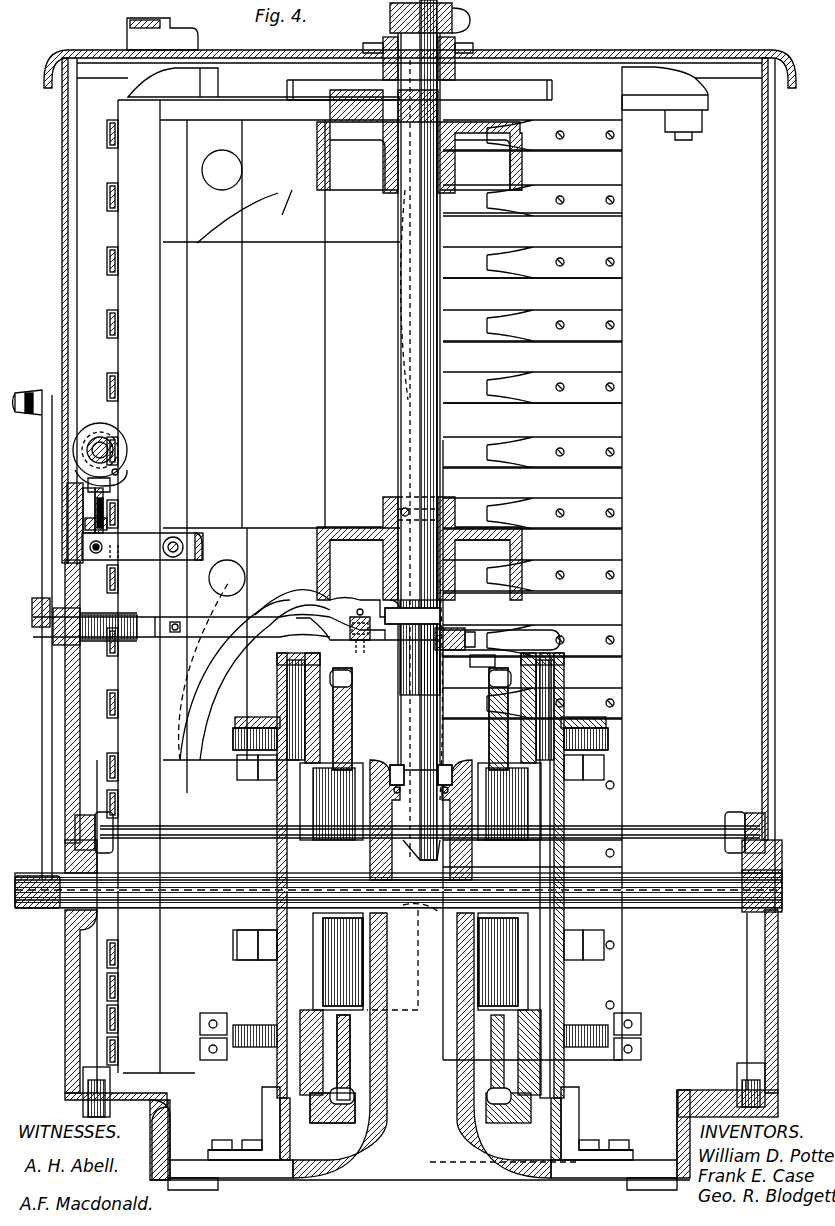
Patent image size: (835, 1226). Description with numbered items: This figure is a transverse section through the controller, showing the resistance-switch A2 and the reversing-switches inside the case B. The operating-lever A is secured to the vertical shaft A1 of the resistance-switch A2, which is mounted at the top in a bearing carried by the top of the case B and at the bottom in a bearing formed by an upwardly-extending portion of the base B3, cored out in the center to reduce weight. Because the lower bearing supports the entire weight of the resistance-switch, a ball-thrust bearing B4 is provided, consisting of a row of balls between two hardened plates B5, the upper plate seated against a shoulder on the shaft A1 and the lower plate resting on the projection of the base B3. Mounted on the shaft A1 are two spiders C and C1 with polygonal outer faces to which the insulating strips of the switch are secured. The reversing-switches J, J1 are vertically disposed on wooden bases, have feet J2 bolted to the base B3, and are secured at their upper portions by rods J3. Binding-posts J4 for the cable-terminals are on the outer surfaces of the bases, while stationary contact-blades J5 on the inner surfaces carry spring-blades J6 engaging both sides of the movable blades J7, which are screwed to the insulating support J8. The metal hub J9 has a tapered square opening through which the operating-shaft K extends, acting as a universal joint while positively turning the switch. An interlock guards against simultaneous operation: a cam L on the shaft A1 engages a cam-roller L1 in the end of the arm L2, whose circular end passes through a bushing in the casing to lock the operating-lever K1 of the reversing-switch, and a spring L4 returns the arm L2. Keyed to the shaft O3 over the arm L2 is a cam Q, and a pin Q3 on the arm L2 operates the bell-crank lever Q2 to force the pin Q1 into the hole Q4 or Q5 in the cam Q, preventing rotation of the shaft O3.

The operating-lever A is at (390, 18).
The case B is at (570, 52).
The spider C is at (410, 136).
The vertical shaft A1 is at (398, 323).
The resistance-switch A2 is at (253, 586).
The spider C1 is at (288, 530).
The operating-lever of the reversing-switch K1 is at (45, 398).
The cam Q is at (92, 420).
The shaft O3 is at (102, 440).
The hole in the cam Q5 is at (115, 472).
The hole in the cam Q4 is at (88, 478).
The pin Q1 is at (103, 505).
The bell-crank lever Q2 is at (128, 560).
The arm L2 is at (262, 622).
The cam L is at (440, 625).
The spring L4 is at (128, 640).
The pin Q3 is at (176, 634).
The cam-roller L1 is at (362, 640).
The reversing-switch J is at (278, 977).
The reversing-switch J1 is at (563, 980).
The feet J2 is at (232, 1152).
The rods J3 is at (142, 822).
The binding-posts J4 is at (237, 742).
The stationary contact-blades J5 is at (492, 673).
The spring-blades J6 is at (352, 705).
The movable blades J7 is at (489, 705).
The support J8 is at (478, 953).
The hub J9 is at (462, 918).
The ball-thrust bearing B4 is at (383, 770).
The hardened plates B5 is at (452, 775).
The operating-shaft K is at (688, 882).
The base B3 is at (522, 1180).